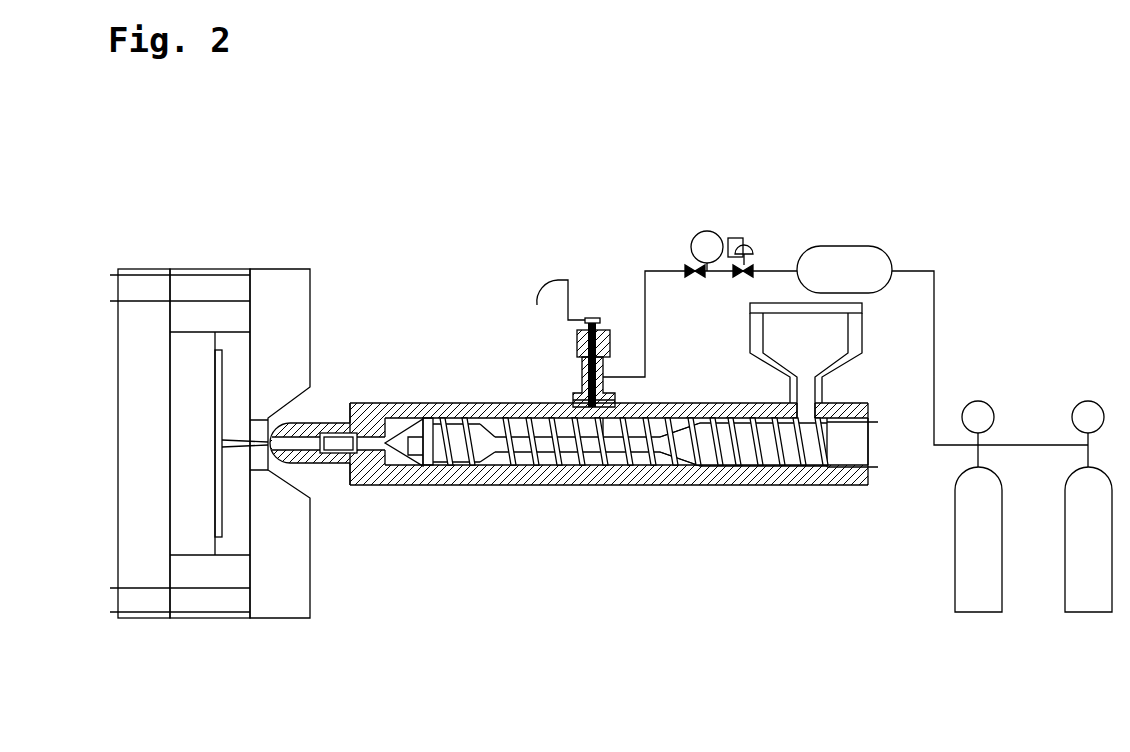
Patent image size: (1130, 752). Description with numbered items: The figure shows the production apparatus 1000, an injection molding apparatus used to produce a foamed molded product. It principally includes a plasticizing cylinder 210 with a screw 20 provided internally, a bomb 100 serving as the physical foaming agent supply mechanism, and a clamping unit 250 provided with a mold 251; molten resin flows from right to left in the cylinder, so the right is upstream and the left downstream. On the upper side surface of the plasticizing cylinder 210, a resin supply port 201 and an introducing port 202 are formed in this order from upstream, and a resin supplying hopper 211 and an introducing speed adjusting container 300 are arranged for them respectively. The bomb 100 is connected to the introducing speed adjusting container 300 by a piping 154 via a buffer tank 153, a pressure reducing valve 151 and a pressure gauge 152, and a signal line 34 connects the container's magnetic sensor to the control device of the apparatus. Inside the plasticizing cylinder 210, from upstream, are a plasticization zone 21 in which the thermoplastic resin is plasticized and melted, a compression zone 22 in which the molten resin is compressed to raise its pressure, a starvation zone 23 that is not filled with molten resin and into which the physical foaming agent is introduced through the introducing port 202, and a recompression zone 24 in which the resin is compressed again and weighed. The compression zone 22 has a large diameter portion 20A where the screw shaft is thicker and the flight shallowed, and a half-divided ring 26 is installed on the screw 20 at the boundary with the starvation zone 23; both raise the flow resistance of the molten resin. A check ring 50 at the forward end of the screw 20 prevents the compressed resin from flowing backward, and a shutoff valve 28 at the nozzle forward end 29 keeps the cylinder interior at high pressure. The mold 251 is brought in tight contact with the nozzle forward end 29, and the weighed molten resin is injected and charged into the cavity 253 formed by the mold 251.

The production apparatus 1000 is at (982, 190).
The bomb 100 is at (978, 590).
The pressure reducing valve 151 is at (741, 237).
The pressure gauge 152 is at (707, 231).
The buffer tank 153 is at (850, 258).
The piping 154 is at (660, 270).
The introducing speed adjusting container 300 is at (584, 274).
The signal line 34 is at (594, 319).
The introducing port 202 is at (572, 394).
The plasticizing cylinder 210 is at (609, 401).
The screw 20 is at (631, 448).
The large diameter portion 20A is at (688, 412).
The plasticization zone 21 is at (724, 485).
The compression zone 22 is at (603, 485).
The starvation zone 23 is at (495, 485).
The recompression zone 24 is at (435, 485).
The ring 26 is at (606, 486).
The shutoff valve 28 is at (337, 443).
The nozzle forward end 29 is at (287, 463).
The check ring 50 is at (400, 488).
The resin supplying hopper 211 is at (852, 327).
The resin supply port 201 is at (803, 407).
The clamping unit 250 is at (216, 463).
The mold 251 is at (188, 513).
The cavity 253 is at (218, 432).